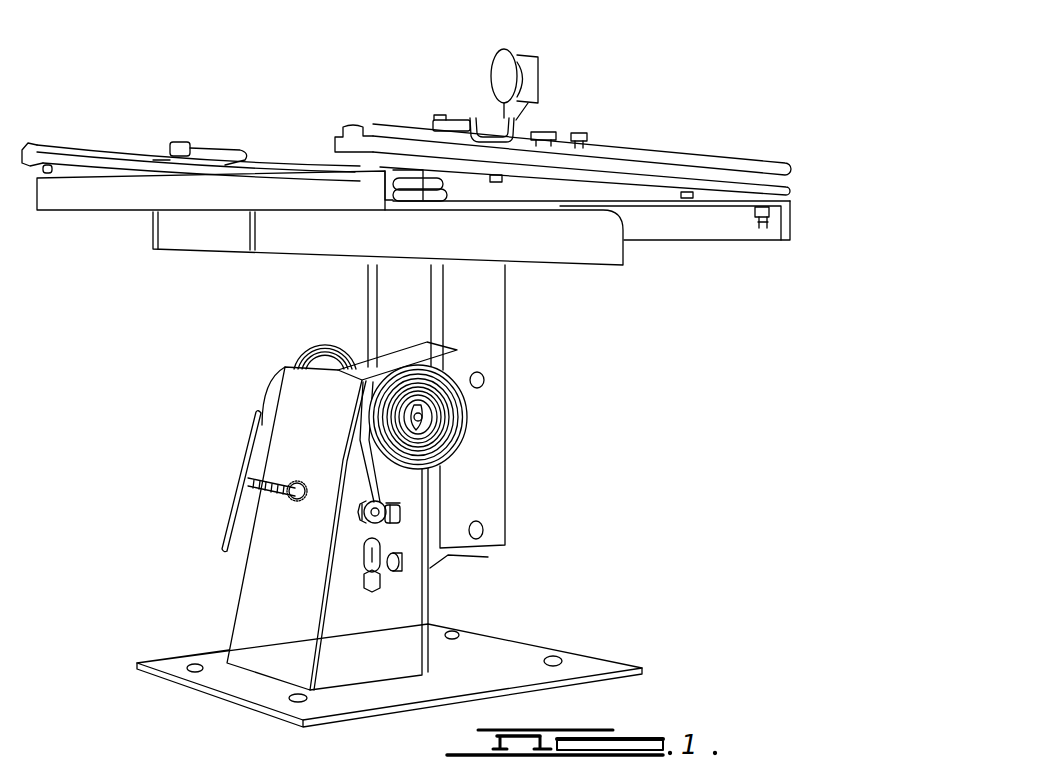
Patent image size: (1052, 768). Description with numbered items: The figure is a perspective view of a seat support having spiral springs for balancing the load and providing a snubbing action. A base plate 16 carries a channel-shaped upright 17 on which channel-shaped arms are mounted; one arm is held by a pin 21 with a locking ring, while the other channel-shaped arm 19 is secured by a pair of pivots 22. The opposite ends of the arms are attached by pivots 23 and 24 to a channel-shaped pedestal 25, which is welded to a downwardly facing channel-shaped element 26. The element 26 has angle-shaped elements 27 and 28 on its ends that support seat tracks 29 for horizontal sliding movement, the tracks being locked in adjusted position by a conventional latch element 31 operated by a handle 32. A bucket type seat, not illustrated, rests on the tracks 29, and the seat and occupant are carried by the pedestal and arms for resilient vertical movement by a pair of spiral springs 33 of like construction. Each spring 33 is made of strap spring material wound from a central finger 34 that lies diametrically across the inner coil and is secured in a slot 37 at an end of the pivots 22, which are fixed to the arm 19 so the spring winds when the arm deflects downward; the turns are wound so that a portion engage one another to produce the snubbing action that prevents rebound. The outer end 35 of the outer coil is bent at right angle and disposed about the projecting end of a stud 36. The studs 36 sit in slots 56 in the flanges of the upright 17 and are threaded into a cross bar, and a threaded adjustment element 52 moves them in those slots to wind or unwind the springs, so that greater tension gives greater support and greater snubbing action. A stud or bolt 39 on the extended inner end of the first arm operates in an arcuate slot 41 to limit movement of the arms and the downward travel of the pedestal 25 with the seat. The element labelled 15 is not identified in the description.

The base bracket 15 is at (477, 558).
The base plate 16 is at (505, 642).
The channel-shaped upright 17 is at (250, 582).
The channel-shaped arm 19 is at (383, 358).
The pin 21 is at (402, 578).
The pivots 22 is at (410, 418).
The pivot 23 is at (482, 527).
The pivot 24 is at (482, 381).
The channel-shaped pedestal 25 is at (487, 293).
The downwardly facing channel-shaped element 26 is at (600, 255).
The angle-shaped element 27 is at (98, 200).
The angle-shaped element 28 is at (700, 232).
The seat tracks 29 is at (93, 146).
The latch element 31 is at (480, 120).
The handle 32 is at (510, 62).
The spiral springs 33 is at (295, 352).
The central finger 34 is at (432, 421).
The end 35 is at (360, 524).
The stud 36 is at (362, 510).
The slot 37 is at (432, 407).
The stud or bolt 39 is at (362, 580).
The arcuate slot 41 is at (401, 524).
The threaded adjustment element 52 is at (252, 485).
The slots 56 is at (390, 504).